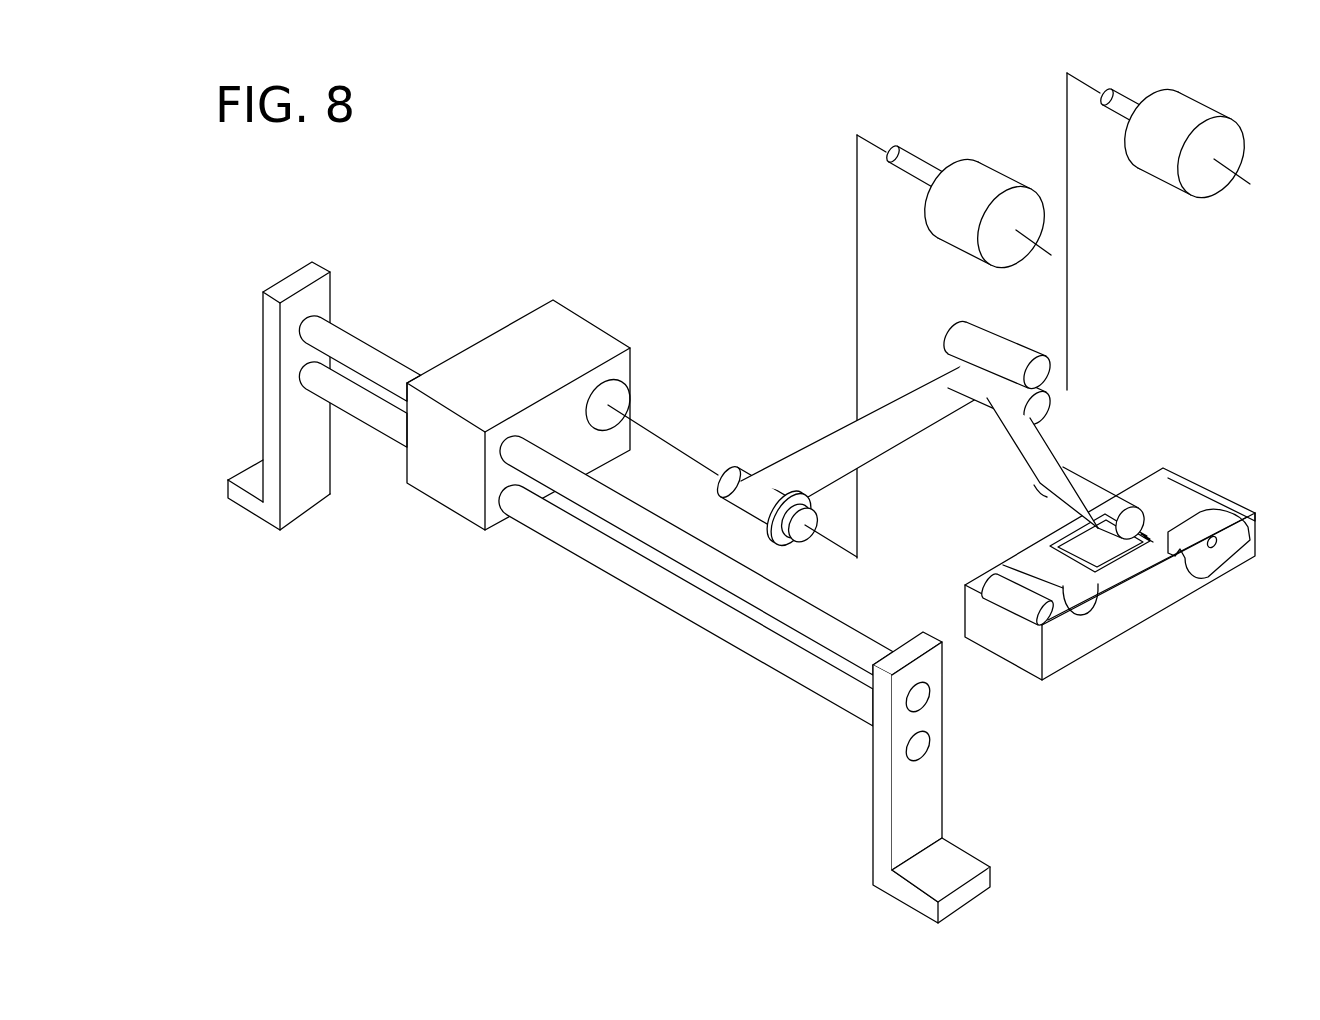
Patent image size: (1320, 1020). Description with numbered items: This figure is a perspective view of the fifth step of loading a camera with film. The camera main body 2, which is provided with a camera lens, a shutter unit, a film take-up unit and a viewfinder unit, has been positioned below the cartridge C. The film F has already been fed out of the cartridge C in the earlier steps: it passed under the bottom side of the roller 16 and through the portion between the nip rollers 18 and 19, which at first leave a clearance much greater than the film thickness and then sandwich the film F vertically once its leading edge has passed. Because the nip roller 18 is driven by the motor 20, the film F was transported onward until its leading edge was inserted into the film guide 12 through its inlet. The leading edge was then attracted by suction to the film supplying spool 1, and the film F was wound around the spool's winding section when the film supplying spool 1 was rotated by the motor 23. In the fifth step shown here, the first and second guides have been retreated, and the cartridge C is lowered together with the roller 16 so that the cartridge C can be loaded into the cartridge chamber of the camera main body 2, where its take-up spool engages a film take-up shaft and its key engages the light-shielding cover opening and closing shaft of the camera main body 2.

The film supplying spool 1 is at (745, 463).
The camera main body 2 is at (1153, 613).
The film guide 12 is at (453, 350).
The roller 16 is at (1087, 477).
The nip roller 18 is at (1003, 333).
The nip roller 19 is at (996, 401).
The motor 20 is at (1197, 108).
The motor 23 is at (998, 172).
The cartridge C is at (1173, 502).
The film F is at (805, 453).